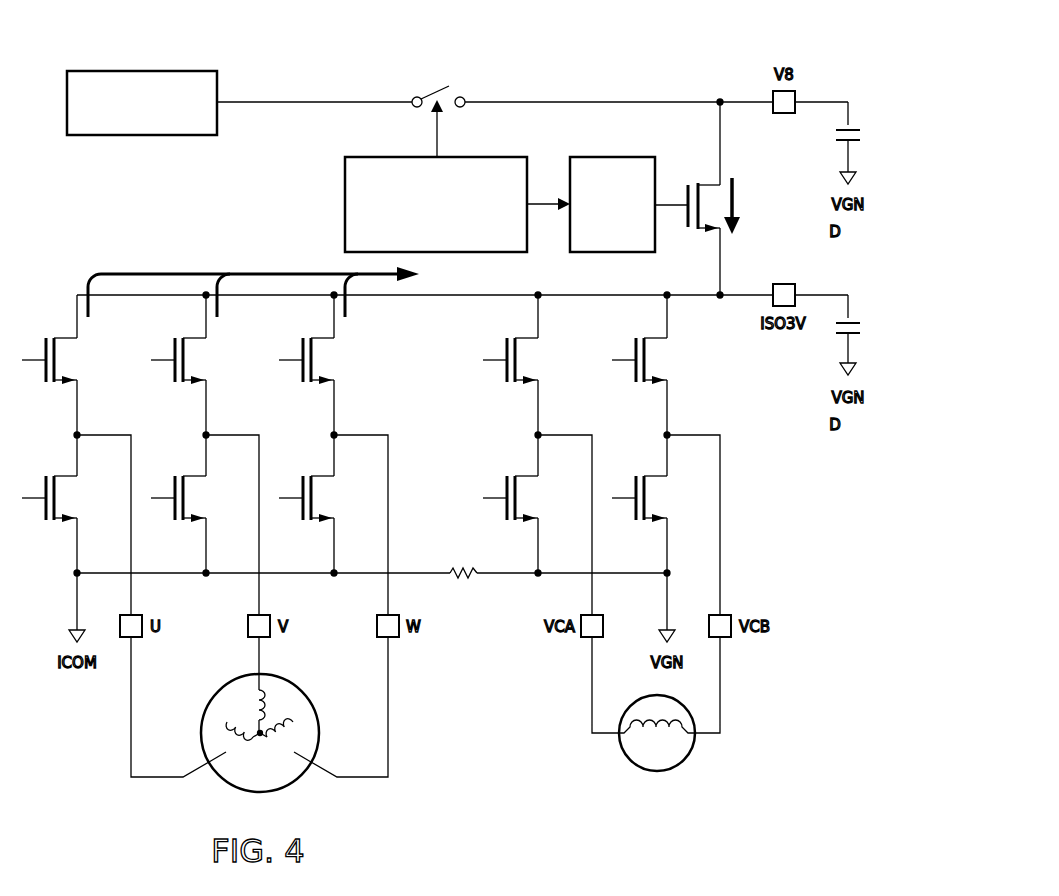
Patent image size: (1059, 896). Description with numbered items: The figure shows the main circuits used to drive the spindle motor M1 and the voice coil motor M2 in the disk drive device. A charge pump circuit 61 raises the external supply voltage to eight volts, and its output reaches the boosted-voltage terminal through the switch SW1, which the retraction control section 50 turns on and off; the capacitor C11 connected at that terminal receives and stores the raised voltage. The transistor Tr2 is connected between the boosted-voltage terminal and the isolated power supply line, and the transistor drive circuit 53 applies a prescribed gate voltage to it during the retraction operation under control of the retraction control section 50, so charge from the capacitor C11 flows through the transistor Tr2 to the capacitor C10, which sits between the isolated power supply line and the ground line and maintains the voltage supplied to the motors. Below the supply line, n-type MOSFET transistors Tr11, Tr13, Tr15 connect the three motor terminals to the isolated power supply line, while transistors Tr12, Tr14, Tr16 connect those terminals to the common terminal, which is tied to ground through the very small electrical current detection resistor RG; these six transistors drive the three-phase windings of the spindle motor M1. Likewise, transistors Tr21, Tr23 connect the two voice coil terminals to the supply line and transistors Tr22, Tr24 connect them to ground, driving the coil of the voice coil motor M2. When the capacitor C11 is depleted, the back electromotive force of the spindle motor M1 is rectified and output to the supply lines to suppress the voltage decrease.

The charge pump circuit 61 is at (142, 70).
The retraction control section 50 is at (345, 193).
The transistor drive circuit 53 is at (625, 217).
The switch SW1 is at (438, 85).
The transistor Tr2 is at (697, 194).
The capacitor C11 is at (868, 135).
The capacitor C10 is at (868, 328).
The transistor Tr11 is at (67, 361).
The transistor Tr12 is at (67, 499).
The transistor Tr13 is at (196, 361).
The transistor Tr14 is at (196, 499).
The transistor Tr15 is at (324, 361).
The transistor Tr16 is at (324, 499).
The transistor Tr21 is at (528, 361).
The transistor Tr22 is at (528, 499).
The transistor Tr23 is at (657, 361).
The transistor Tr24 is at (657, 499).
The electrical current detection resistor RG is at (463, 561).
The spindle motor M1 is at (259, 728).
The voice coil motor M2 is at (656, 722).